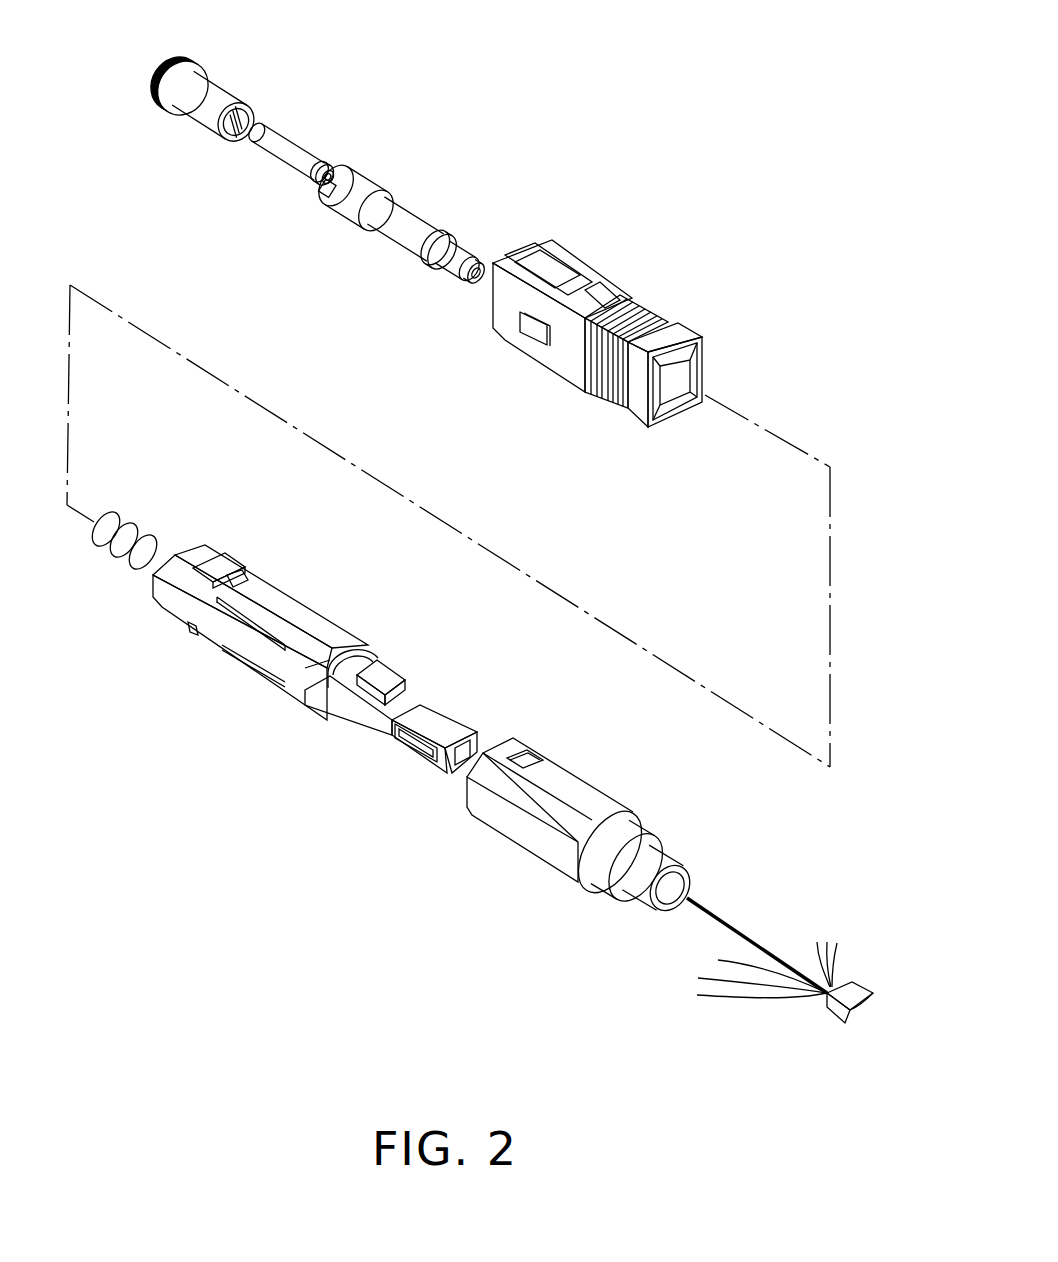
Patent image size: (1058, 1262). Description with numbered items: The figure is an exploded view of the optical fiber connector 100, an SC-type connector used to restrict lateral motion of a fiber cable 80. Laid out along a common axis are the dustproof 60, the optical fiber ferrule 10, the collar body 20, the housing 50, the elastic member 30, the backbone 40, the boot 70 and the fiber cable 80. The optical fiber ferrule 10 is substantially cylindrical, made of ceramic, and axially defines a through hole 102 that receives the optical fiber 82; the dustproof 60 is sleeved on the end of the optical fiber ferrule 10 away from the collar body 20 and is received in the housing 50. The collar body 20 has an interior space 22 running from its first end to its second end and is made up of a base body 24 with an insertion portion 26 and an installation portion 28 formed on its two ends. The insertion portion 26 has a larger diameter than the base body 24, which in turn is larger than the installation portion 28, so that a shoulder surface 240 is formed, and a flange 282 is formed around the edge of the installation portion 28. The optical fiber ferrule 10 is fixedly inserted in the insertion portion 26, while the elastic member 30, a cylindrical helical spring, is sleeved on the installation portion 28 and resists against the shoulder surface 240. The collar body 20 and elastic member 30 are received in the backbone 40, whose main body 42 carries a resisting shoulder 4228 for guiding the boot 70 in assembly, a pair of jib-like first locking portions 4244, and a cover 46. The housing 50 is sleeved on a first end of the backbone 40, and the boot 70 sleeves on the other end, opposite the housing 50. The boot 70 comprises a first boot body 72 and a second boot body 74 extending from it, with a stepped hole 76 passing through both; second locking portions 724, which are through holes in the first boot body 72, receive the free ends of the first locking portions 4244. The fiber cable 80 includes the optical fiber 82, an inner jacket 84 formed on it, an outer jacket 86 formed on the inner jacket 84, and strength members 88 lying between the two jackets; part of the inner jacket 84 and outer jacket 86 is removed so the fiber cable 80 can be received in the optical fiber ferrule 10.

The optical fiber connector 100 is at (512, 70).
The dustproof 60 is at (173, 61).
The optical fiber ferrule 10 is at (282, 143).
The through hole 102 is at (325, 167).
The collar body 20 is at (432, 150).
The base body 24 is at (367, 190).
The insertion portion 26 is at (413, 222).
The shoulder surface 240 is at (442, 258).
The installation portion 28 is at (460, 260).
The flange 282 is at (468, 283).
The interior space 22 is at (477, 282).
The housing 50 is at (602, 273).
The elastic member 30 is at (128, 518).
The backbone 40 is at (253, 680).
The main body 42 is at (222, 625).
The resisting shoulder 4228 is at (367, 648).
The first locking portion 4244 is at (382, 672).
The cover 46 is at (418, 753).
The boot 70 is at (692, 768).
The first boot body 72 is at (598, 800).
The second locking portion 724 is at (540, 763).
The second boot body 74 is at (653, 862).
The stepped hole 76 is at (667, 897).
The fiber cable 80 is at (787, 865).
The optical fiber 82 is at (720, 913).
The inner jacket 84 is at (777, 957).
The outer jacket 86 is at (850, 990).
The strength members 88 is at (768, 990).